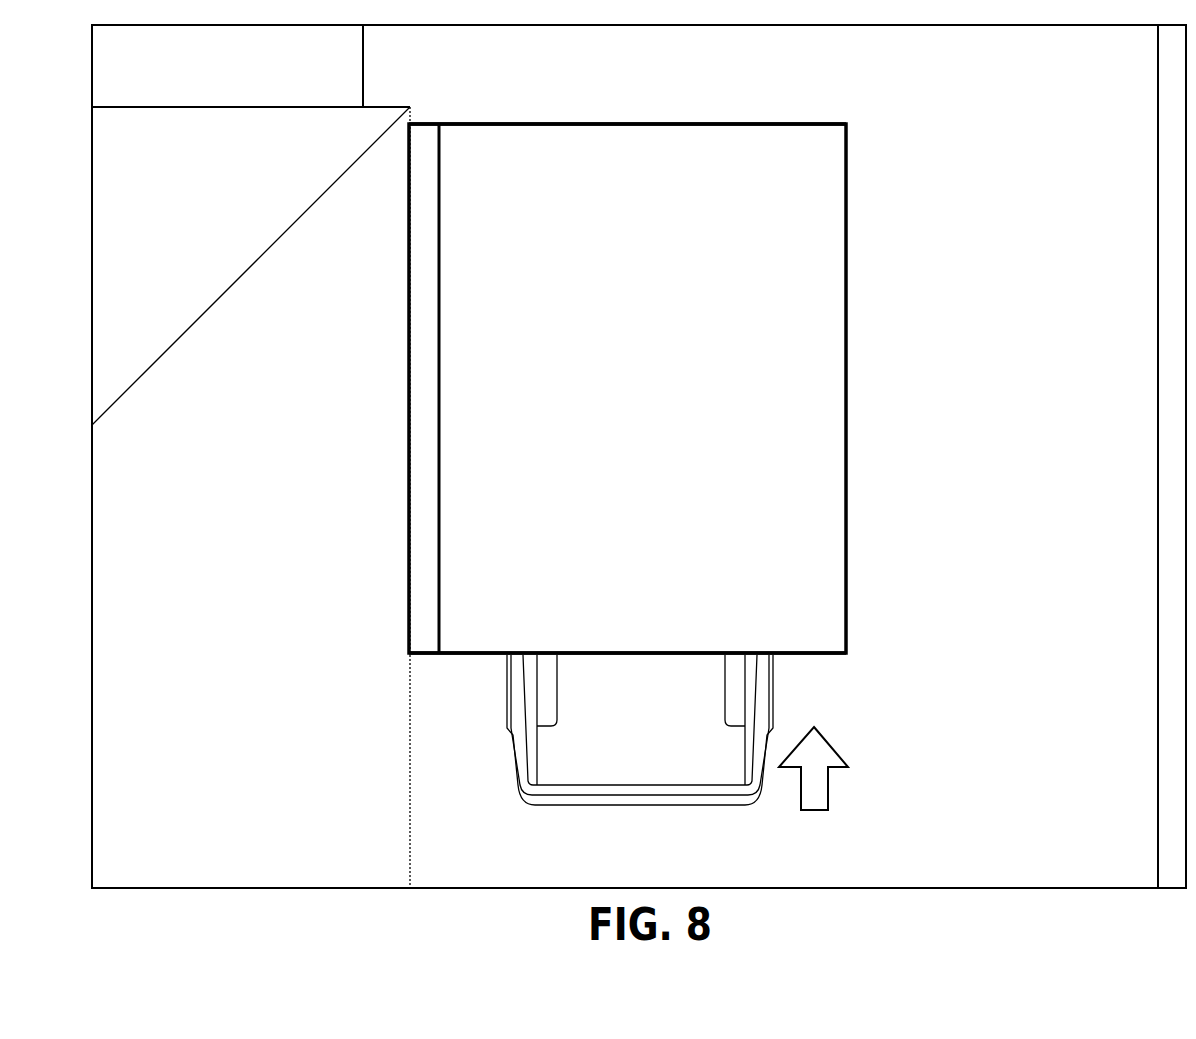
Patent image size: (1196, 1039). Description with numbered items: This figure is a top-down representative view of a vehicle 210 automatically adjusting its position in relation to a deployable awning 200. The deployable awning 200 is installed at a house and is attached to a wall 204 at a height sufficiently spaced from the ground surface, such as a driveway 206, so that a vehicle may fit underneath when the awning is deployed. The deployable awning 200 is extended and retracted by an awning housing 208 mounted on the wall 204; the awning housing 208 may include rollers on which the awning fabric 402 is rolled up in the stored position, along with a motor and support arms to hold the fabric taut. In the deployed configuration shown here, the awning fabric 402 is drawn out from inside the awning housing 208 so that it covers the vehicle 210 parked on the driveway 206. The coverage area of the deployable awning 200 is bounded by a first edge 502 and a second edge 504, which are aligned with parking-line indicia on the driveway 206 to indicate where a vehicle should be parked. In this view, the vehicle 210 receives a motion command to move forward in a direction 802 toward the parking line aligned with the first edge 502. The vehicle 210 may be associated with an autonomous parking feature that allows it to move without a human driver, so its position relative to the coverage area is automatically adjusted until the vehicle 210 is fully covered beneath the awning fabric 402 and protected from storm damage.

The deployable awning 200 is at (860, 262).
The wall 204 is at (435, 857).
The driveway 206 is at (550, 266).
The awning housing 208 is at (423, 180).
The vehicle 210 is at (760, 688).
The awning fabric 402 is at (627, 388).
The first edge 502 is at (757, 123).
The second edge 504 is at (463, 655).
The direction 802 is at (830, 787).